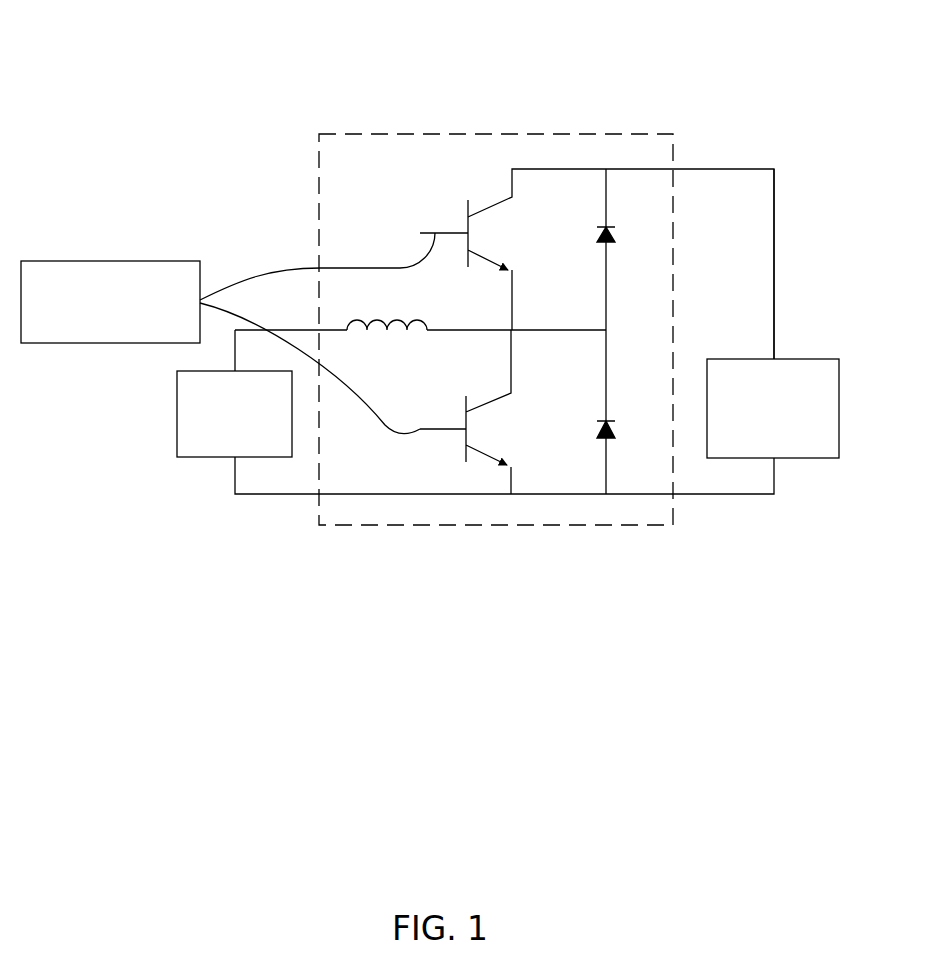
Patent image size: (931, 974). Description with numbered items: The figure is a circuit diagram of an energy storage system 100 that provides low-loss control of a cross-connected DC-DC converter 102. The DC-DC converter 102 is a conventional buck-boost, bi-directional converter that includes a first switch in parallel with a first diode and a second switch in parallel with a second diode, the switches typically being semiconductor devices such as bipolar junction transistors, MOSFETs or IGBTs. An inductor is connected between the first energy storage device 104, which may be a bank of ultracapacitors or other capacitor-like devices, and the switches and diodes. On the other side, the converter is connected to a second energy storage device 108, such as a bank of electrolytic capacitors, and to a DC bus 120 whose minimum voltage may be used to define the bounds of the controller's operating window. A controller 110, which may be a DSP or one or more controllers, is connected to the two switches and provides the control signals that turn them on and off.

The energy storage system 100 is at (282, 89).
The DC-DC converter 102 is at (480, 134).
The first energy storage device 104 is at (188, 457).
The second energy storage device 108 is at (826, 339).
The controller 110 is at (110, 261).
The DC bus 120 is at (775, 218).